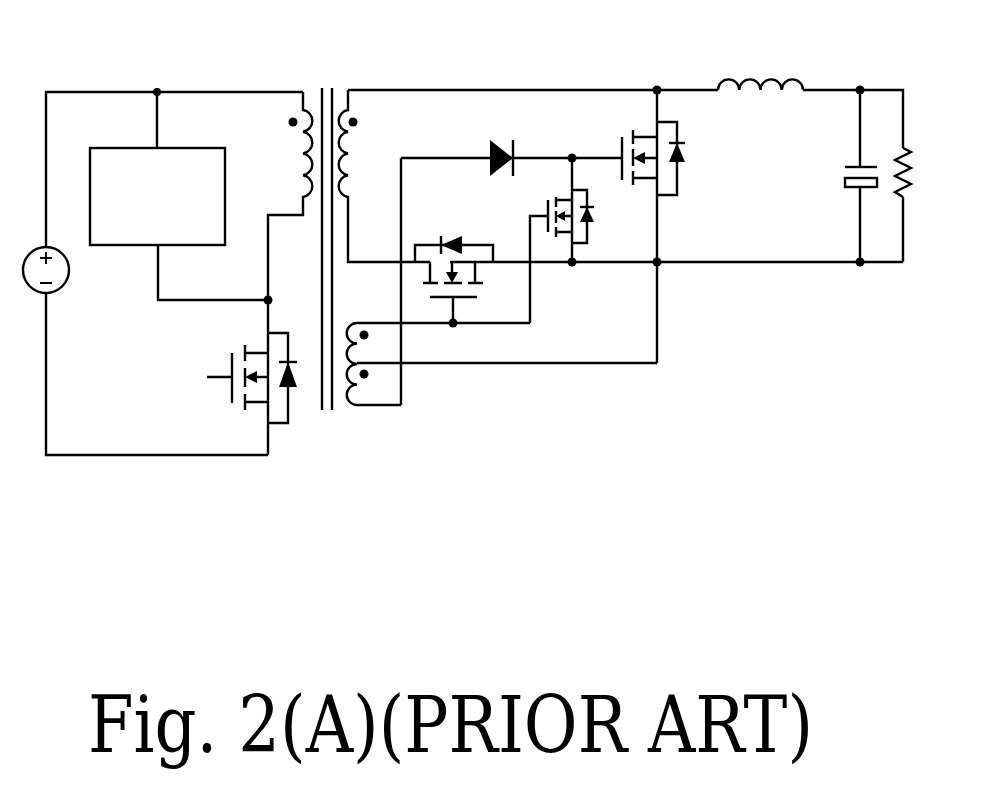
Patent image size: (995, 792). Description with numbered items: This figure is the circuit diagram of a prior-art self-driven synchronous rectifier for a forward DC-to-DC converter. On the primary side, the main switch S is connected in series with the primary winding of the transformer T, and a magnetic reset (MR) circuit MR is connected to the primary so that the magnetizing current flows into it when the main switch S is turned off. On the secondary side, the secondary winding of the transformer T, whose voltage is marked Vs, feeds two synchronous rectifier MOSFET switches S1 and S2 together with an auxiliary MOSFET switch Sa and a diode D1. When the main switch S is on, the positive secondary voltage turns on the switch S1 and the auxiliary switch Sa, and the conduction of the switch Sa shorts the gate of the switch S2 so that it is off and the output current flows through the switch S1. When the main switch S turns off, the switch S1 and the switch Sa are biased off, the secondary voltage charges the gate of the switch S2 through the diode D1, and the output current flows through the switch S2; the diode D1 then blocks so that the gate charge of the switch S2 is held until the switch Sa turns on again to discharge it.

The transformer T is at (349, 245).
The magnetic reset circuit MR is at (157, 196).
The main switch S is at (236, 378).
The diode D1 is at (511, 260).
The synchronous rectifier MOSFET switch S1 is at (454, 267).
The auxiliary MOSFET switch Sa is at (579, 240).
The synchronous rectifier MOSFET switch S2 is at (676, 226).
The secondary winding voltage Vs is at (373, 318).